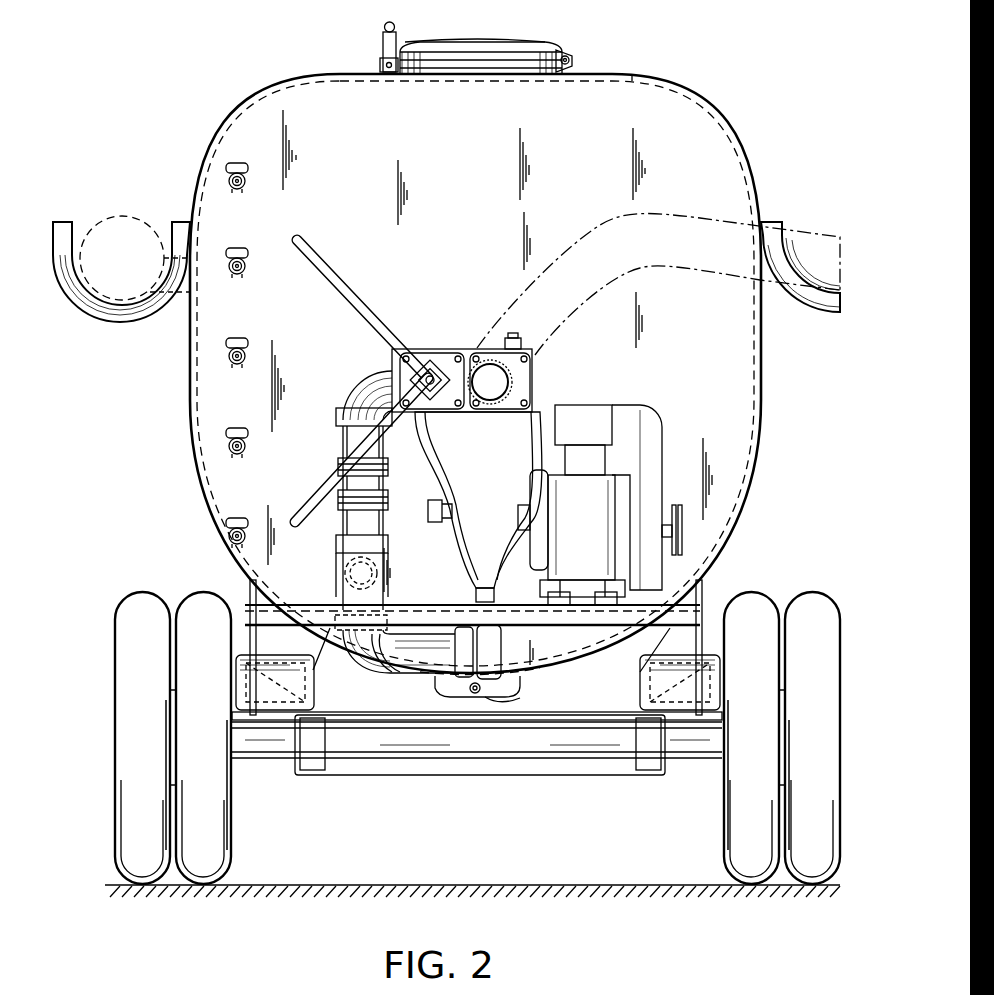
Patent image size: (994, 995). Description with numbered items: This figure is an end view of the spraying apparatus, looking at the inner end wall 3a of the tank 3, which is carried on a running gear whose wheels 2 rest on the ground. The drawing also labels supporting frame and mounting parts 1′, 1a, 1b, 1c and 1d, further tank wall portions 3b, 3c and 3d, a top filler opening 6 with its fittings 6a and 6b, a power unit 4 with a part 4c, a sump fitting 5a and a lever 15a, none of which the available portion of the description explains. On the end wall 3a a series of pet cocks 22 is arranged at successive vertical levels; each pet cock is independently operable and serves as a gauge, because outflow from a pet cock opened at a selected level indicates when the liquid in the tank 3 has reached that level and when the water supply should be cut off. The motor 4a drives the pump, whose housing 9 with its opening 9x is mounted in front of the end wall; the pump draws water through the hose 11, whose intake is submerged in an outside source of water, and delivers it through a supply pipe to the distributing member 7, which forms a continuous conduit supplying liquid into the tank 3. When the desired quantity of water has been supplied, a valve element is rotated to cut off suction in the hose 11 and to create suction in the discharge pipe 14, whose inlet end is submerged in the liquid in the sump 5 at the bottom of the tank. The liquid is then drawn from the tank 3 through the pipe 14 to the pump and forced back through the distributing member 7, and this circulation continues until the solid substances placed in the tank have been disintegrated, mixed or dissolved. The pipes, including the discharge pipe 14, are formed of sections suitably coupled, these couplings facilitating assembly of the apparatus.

The platform 1′ is at (472, 590).
The frame bracket 1a is at (738, 650).
The frame upright 1b is at (724, 585).
The cross beam 1c is at (560, 626).
The engine mount 1d is at (582, 595).
The axle 2 is at (254, 842).
The tank 3 is at (783, 478).
The inner end wall of the tank 3a is at (728, 513).
The tank hook bracket 3b is at (189, 345).
The tank bottom 3c is at (568, 663).
The tank top 3d is at (636, 82).
The engine 4 is at (458, 589).
The motor 4a is at (581, 527).
The pulley 4c is at (680, 542).
The sump 5 is at (448, 692).
The drain bracket 5a is at (510, 698).
The hatch cover 6 is at (500, 72).
The hatch latch 6a is at (540, 50).
The hatch hinge 6b is at (382, 46).
The distributing member 7 is at (343, 575).
The pump 9 is at (467, 467).
The pump port 9x is at (496, 382).
The hose 11 is at (690, 262).
The discharge pipe 14 is at (357, 524).
The valve lever 15a is at (340, 285).
The pet cocks 22 is at (241, 212).